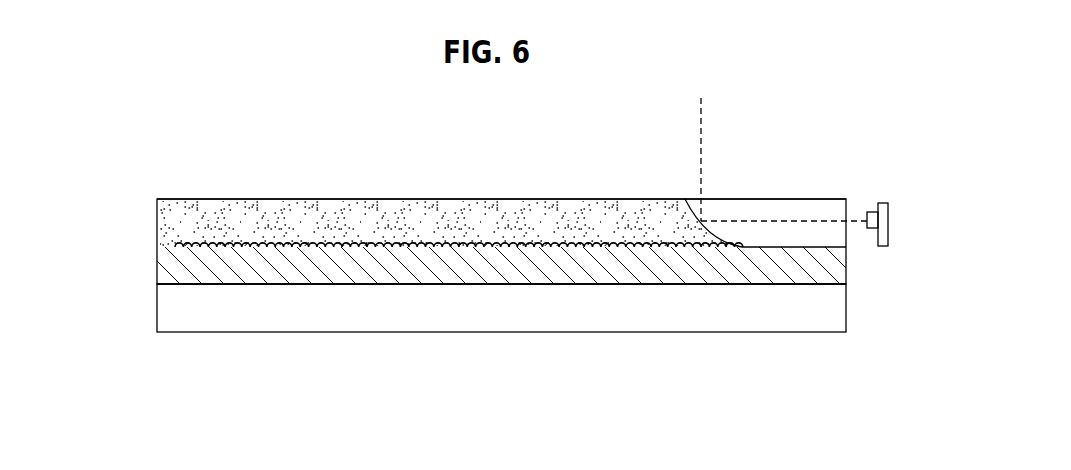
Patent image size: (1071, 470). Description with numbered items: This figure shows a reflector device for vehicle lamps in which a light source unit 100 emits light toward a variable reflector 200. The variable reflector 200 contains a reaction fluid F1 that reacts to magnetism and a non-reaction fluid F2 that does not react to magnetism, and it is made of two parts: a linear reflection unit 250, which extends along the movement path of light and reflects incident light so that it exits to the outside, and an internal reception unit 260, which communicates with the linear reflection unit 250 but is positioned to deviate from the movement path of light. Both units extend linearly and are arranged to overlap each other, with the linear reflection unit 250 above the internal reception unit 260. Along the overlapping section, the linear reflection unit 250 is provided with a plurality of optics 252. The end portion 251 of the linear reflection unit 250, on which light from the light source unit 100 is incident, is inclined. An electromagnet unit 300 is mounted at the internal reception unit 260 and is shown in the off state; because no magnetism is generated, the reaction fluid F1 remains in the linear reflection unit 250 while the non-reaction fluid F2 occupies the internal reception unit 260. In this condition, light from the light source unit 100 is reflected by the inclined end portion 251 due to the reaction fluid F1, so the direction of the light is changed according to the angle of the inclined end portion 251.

The light source unit 100 is at (880, 195).
The variable reflector 200 is at (293, 199).
The linear reflection unit 250 is at (156, 227).
The end portion 251 is at (699, 214).
The optics 252 is at (529, 242).
The internal reception unit 260 is at (156, 267).
The electromagnet unit 300 is at (297, 338).
The reaction fluid F1 is at (418, 222).
The non-reaction fluid F2 is at (418, 274).